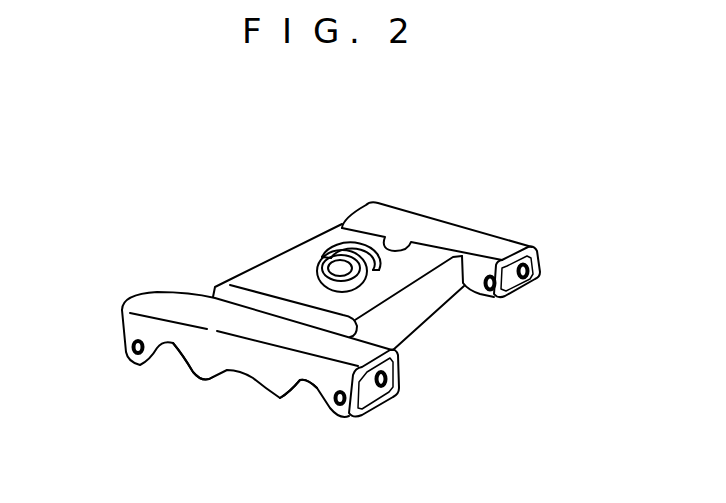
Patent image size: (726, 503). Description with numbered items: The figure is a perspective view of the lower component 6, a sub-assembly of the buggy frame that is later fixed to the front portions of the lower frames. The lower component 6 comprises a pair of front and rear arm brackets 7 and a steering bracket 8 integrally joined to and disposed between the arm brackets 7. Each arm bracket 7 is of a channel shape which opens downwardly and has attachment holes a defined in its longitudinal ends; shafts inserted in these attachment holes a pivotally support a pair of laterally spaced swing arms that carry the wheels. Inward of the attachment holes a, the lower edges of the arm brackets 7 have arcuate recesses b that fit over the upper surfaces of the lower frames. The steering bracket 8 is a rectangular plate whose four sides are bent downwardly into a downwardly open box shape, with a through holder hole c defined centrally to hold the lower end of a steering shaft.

The lower component 6 is at (503, 197).
The arm bracket 7 is at (177, 308).
The steering bracket 8 is at (272, 280).
The attachment hole a is at (127, 356).
The arcuate recess b is at (183, 358).
The holder hole c is at (337, 258).